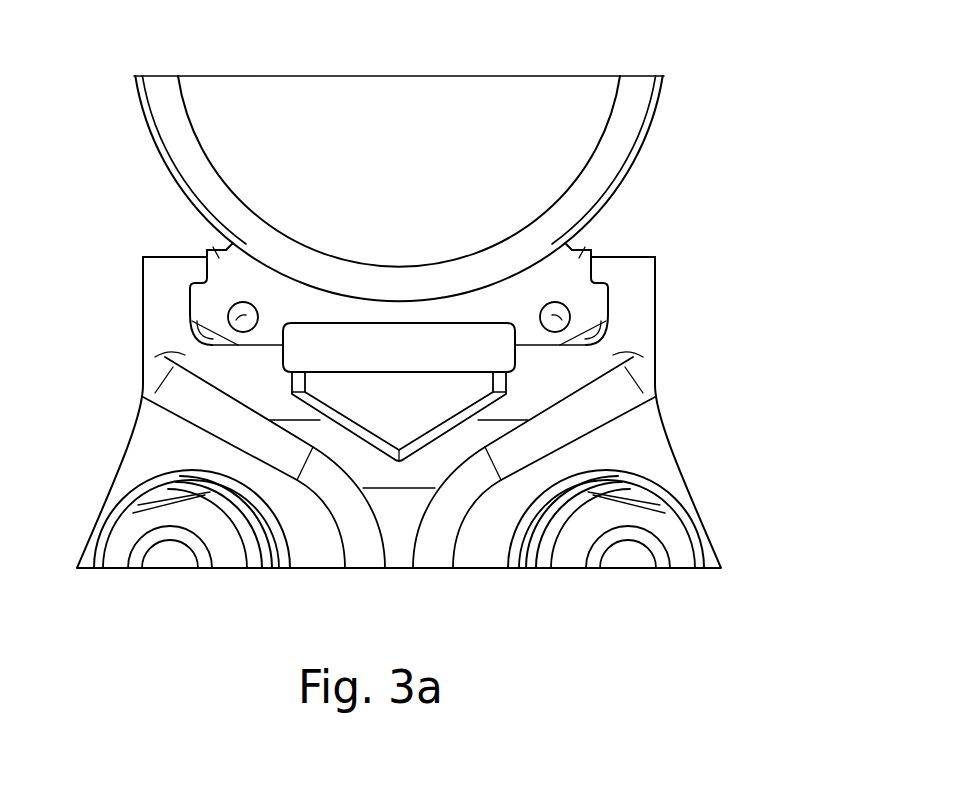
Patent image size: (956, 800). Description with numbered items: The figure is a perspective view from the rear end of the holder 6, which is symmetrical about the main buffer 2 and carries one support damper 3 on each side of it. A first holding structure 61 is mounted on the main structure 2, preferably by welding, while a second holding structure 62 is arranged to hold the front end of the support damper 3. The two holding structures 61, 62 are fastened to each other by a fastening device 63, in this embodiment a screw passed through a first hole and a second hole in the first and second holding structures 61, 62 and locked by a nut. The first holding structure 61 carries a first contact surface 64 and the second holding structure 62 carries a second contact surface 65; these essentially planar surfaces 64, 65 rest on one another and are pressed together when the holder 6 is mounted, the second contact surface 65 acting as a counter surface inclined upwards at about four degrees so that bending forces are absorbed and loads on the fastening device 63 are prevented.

The main structure 2 is at (684, 125).
The holder 6 is at (750, 223).
The first holding structure 61 is at (210, 250).
The second holding structure 62 is at (173, 354).
The fastening device 63 is at (190, 320).
The first contact surface 64 is at (195, 282).
The second contact surface 65 is at (190, 298).
The support damper 3 is at (127, 530).